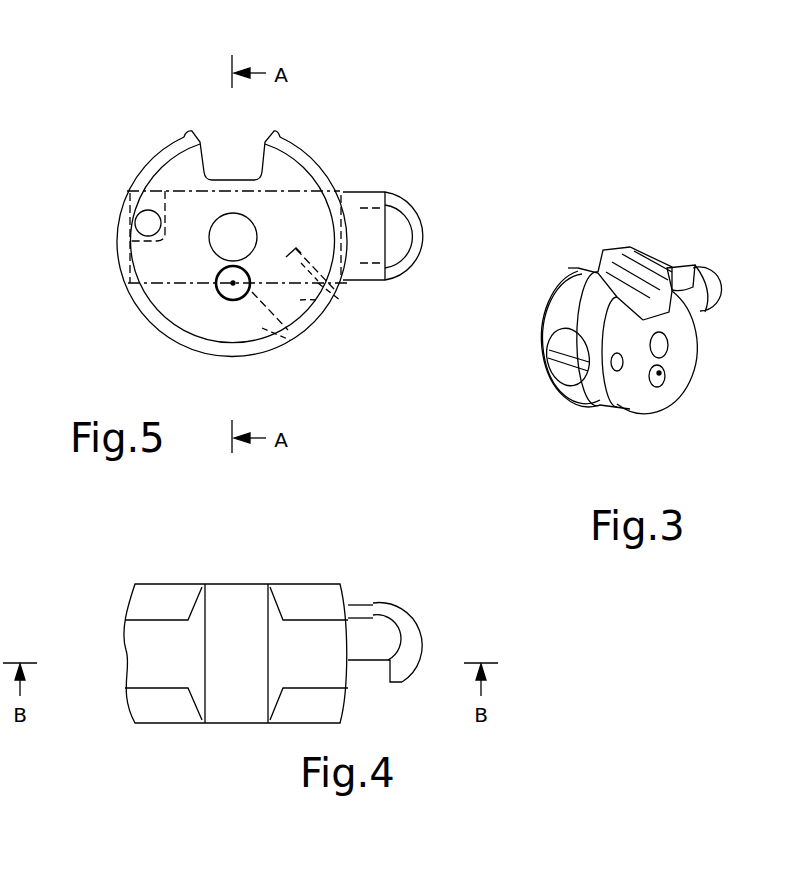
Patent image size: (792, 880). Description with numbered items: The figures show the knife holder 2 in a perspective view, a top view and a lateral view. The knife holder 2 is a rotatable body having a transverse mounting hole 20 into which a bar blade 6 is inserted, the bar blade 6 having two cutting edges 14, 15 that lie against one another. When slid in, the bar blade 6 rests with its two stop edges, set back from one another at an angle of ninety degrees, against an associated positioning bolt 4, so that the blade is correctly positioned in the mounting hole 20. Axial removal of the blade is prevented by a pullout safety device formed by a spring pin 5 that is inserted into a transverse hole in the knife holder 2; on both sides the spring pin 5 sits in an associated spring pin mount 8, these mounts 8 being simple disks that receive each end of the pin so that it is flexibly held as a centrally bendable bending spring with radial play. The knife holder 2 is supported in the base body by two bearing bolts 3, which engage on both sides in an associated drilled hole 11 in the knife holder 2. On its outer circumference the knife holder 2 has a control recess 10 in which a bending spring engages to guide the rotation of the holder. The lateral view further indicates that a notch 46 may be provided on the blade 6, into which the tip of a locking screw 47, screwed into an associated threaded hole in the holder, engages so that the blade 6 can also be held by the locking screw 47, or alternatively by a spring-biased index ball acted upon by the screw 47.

In FIG. 5, the knife holder 2 is at (302, 182).
In FIG. 3, the knife holder 2 is at (708, 345).
In FIG. 4, the knife holder 2 is at (326, 590).
In FIG. 5, the bearing bolt 3 is at (230, 225).
In FIG. 5, the positioning bolt 4 is at (150, 223).
In FIG. 3, the positioning bolt 4 is at (568, 342).
In FIG. 5, the spring pin 5 is at (233, 283).
In FIG. 3, the spring pin 5 is at (659, 374).
In FIG. 5, the bar blade 6 is at (362, 235).
In FIG. 3, the bar blade 6 is at (680, 263).
In FIG. 4, the bar blade 6 is at (375, 640).
In FIG. 5, the spring pin mount 8 is at (240, 298).
In FIG. 3, the spring pin mount 8 is at (653, 381).
In FIG. 5, the control recess 10 is at (233, 153).
In FIG. 3, the control recess 10 is at (593, 265).
In FIG. 4, the control recess 10 is at (242, 690).
In FIG. 3, the drilled hole 11 is at (663, 345).
In FIG. 5, the cutting edge 14 is at (365, 192).
In FIG. 3, the cutting edge 14 is at (695, 267).
In FIG. 4, the cutting edge 14 is at (367, 662).
In FIG. 5, the cutting edge 15 is at (367, 282).
In FIG. 3, the transverse mounting hole 20 is at (550, 353).
In FIG. 5, the notch 46 is at (290, 252).
In FIG. 5, the locking screw 47 is at (326, 298).